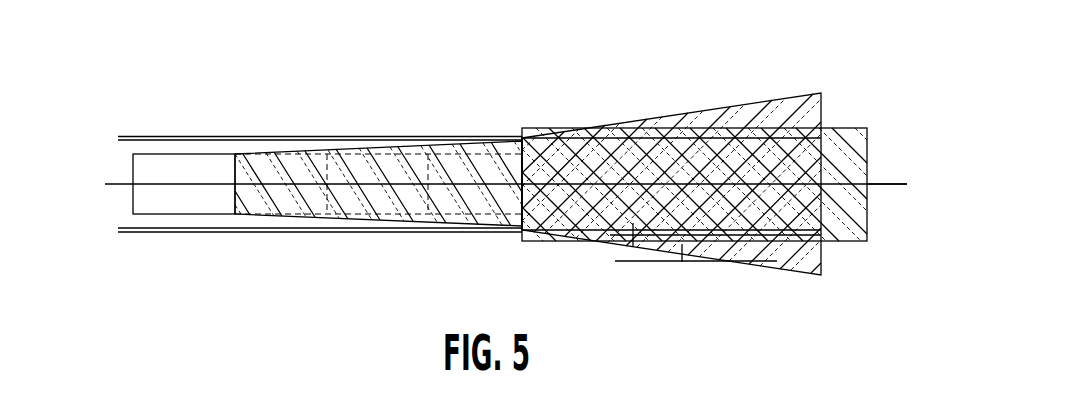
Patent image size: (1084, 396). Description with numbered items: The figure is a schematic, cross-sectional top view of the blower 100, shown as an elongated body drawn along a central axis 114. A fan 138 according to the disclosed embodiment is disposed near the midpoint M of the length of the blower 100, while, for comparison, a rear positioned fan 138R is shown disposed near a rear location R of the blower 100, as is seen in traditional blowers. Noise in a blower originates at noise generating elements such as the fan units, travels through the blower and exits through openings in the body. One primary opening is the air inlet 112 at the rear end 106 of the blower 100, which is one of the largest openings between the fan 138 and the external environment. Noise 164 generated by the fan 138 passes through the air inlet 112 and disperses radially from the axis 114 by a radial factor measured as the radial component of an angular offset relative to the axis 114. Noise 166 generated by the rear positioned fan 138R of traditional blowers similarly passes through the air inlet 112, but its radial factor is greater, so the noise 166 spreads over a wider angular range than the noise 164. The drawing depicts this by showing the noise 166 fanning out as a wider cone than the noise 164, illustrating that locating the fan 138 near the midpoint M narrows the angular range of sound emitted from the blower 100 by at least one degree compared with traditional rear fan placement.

The blower 100 is at (120, 100).
The midpoint M is at (179, 130).
The rear location R is at (385, 128).
The fan 138 is at (165, 207).
The rear positioned fan 138R is at (368, 205).
The rear end 106 is at (530, 130).
The air inlet 112 is at (543, 235).
The noise 166 is at (800, 270).
The noise 164 is at (850, 237).
The axis 114 is at (880, 185).